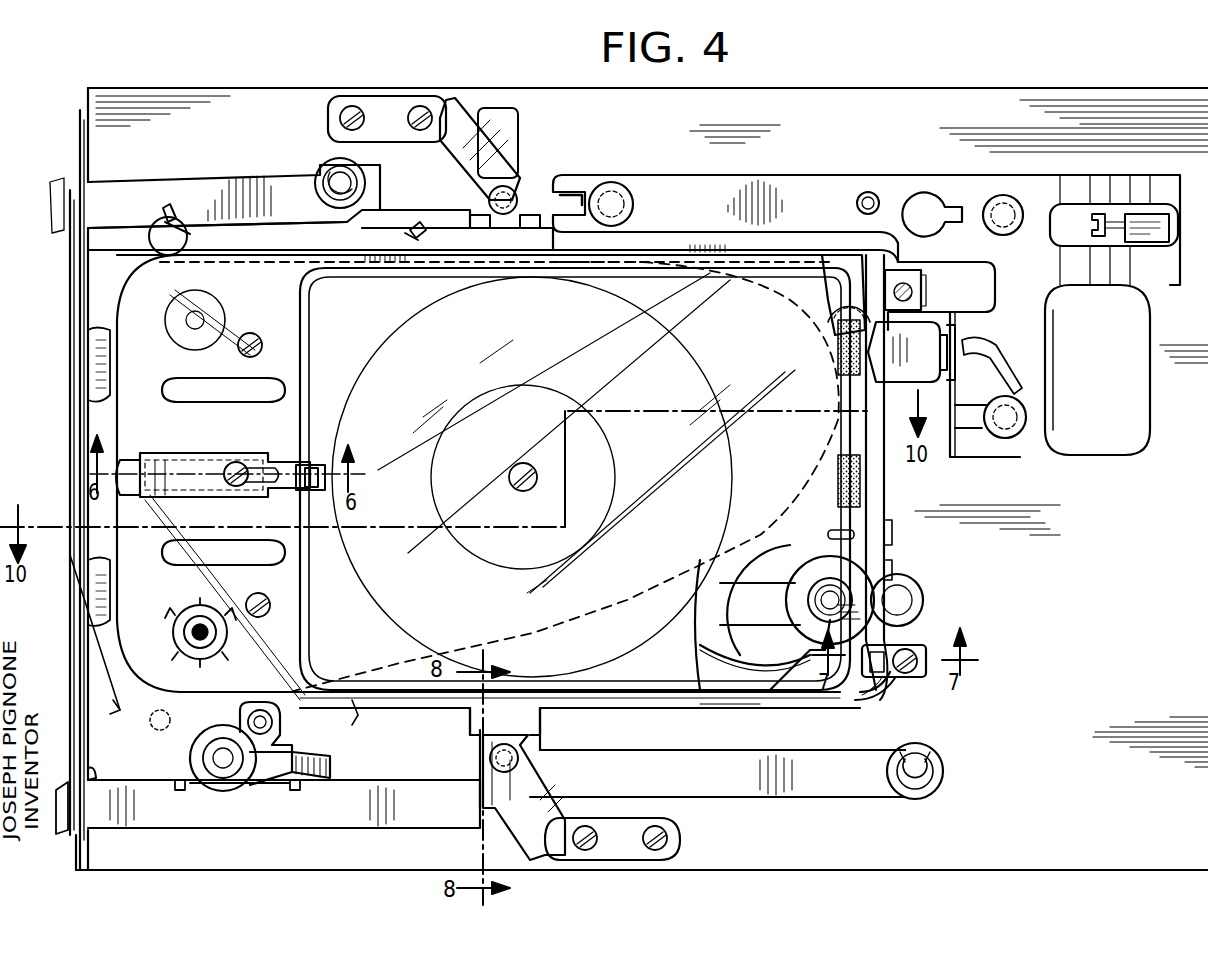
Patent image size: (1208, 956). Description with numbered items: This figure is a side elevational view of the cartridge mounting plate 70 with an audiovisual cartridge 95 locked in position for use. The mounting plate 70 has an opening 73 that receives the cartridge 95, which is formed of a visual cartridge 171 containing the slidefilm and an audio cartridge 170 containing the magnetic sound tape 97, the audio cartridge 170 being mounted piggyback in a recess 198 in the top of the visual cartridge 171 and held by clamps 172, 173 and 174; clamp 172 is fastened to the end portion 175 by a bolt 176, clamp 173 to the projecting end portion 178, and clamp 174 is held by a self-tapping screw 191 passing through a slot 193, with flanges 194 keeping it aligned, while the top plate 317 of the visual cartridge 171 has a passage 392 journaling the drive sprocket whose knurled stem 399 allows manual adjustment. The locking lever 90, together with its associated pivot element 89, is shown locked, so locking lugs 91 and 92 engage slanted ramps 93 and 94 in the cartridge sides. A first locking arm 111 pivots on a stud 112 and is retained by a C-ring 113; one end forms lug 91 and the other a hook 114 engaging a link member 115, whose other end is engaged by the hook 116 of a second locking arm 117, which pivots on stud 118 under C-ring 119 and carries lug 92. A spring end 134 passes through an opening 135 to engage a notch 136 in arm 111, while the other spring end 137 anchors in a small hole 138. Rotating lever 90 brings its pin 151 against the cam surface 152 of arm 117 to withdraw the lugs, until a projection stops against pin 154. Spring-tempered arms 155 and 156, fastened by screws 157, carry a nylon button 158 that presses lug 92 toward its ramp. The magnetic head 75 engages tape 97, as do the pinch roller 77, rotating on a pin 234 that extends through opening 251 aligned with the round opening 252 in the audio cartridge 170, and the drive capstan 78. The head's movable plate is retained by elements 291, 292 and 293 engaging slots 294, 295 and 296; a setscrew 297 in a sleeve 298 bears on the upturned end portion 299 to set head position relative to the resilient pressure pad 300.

The mounting plate 70 is at (956, 858).
The opening 73 is at (628, 585).
The magnetic pickup head 75 is at (917, 368).
The pinch roller 77 is at (815, 622).
The drive capstan 78 is at (905, 600).
The pivot hub 89 is at (223, 758).
The locking lever 90 is at (333, 766).
The locking lug 91 is at (522, 214).
The locking lug 92 is at (542, 722).
The slanted ramp 93 is at (484, 240).
The slanted ramp 94 is at (470, 722).
The audiovisual cartridge 95 is at (892, 548).
The magnetic sound tape 97 is at (868, 520).
The first locking arm 111 is at (210, 185).
The stud 112 is at (340, 172).
The C-ring 113 is at (330, 218).
The hook 114 is at (56, 210).
The link member 115 is at (72, 300).
The hook 116 is at (92, 774).
The second locking arm 117 is at (212, 830).
The stud 118 is at (920, 770).
The C-ring 119 is at (935, 787).
The spring end 134 is at (168, 206).
The opening 135 is at (156, 247).
The notch 136 is at (185, 232).
The spring end 137 is at (412, 226).
The small hole 138 is at (408, 236).
The pin 151 is at (273, 724).
The cam surface 152 is at (268, 785).
The pin 154 is at (152, 714).
The spring arm 155 is at (490, 150).
The spring arm 156 is at (530, 780).
The screws 157 is at (354, 110).
The nylon button 158 is at (510, 190).
The audio cartridge 170 is at (492, 360).
The visual cartridge 171 is at (85, 610).
The clamp 172 is at (858, 695).
The clamp 173 is at (926, 284).
The clamp 174 is at (200, 453).
The end portion 175 is at (910, 680).
The bolt 176 is at (900, 645).
The projecting end portion 178 is at (924, 302).
The self-tapping screw 191 is at (230, 485).
The slot 193 is at (255, 465).
The flanges 194 is at (150, 455).
The recess 198 is at (306, 648).
The pin 234 is at (825, 600).
The opening 251 is at (779, 595).
The round opening 252 is at (770, 660).
The retaining element 291 is at (616, 186).
The retaining element 292 is at (1003, 196).
The retaining element 293 is at (1008, 438).
The slot 294 is at (577, 195).
The slot 295 is at (962, 208).
The slot 296 is at (978, 452).
The setscrew 297 is at (1100, 214).
The sleeve 298 is at (1145, 214).
The upturned end portion 299 is at (1196, 292).
The resilient pressure pad 300 is at (840, 345).
The top plate 317 is at (125, 355).
The passage 392 is at (190, 652).
The knurled stem 399 is at (203, 648).